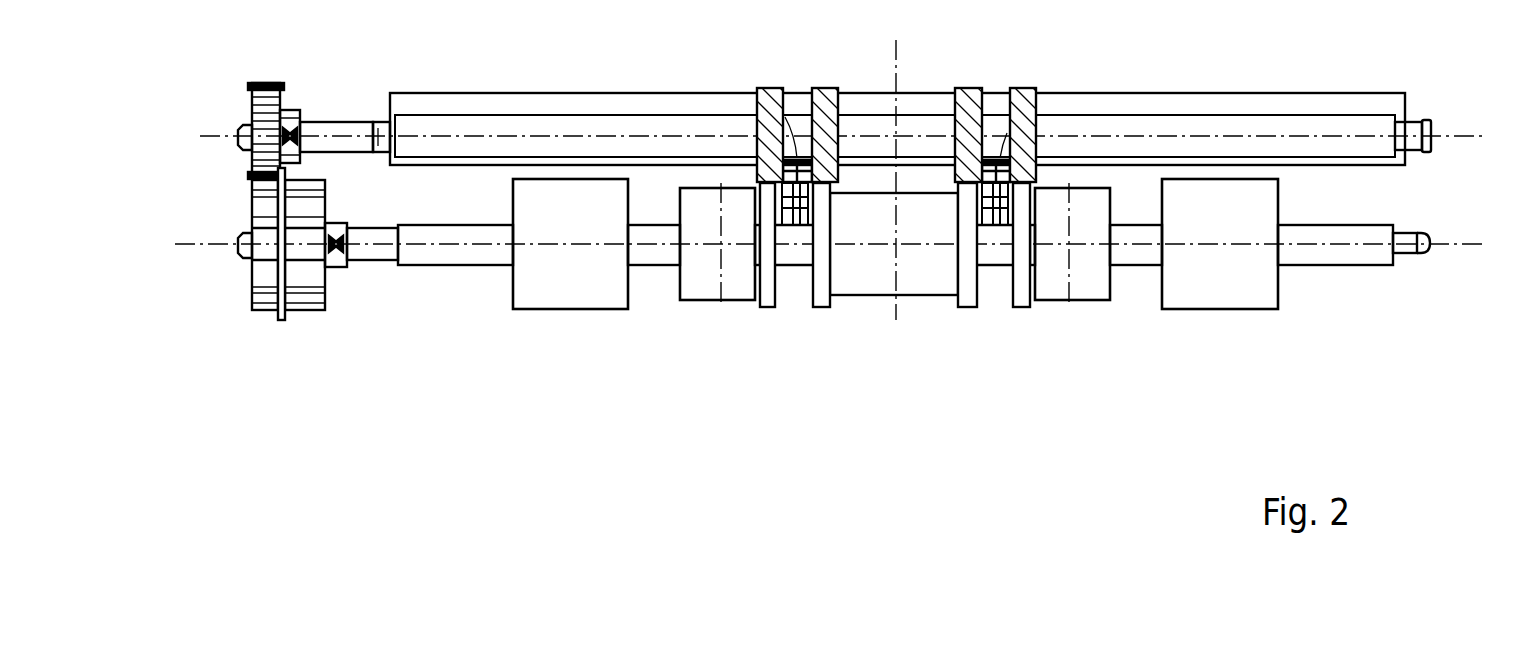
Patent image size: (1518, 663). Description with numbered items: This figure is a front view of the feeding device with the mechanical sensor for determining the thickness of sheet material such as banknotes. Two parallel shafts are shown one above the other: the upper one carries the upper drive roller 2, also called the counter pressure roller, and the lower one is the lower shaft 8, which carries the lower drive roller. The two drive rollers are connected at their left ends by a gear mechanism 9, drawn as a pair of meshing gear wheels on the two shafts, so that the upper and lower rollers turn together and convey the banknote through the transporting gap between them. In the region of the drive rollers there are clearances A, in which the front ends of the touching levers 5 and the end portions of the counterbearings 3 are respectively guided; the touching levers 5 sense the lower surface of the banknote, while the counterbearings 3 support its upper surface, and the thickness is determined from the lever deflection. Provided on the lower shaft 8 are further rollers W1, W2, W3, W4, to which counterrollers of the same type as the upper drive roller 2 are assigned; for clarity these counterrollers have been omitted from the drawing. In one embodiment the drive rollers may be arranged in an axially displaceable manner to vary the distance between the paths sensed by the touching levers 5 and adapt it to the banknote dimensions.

The upper drive roller 2 is at (825, 88).
The counterbearing 3 is at (758, 90).
The touching lever 5 is at (793, 196).
The lower shaft 8 is at (1355, 266).
The gear mechanism 9 is at (243, 203).
The clearance A is at (795, 83).
The roller W1 is at (593, 295).
The roller W2 is at (735, 290).
The roller W3 is at (1093, 292).
The roller W4 is at (1240, 292).